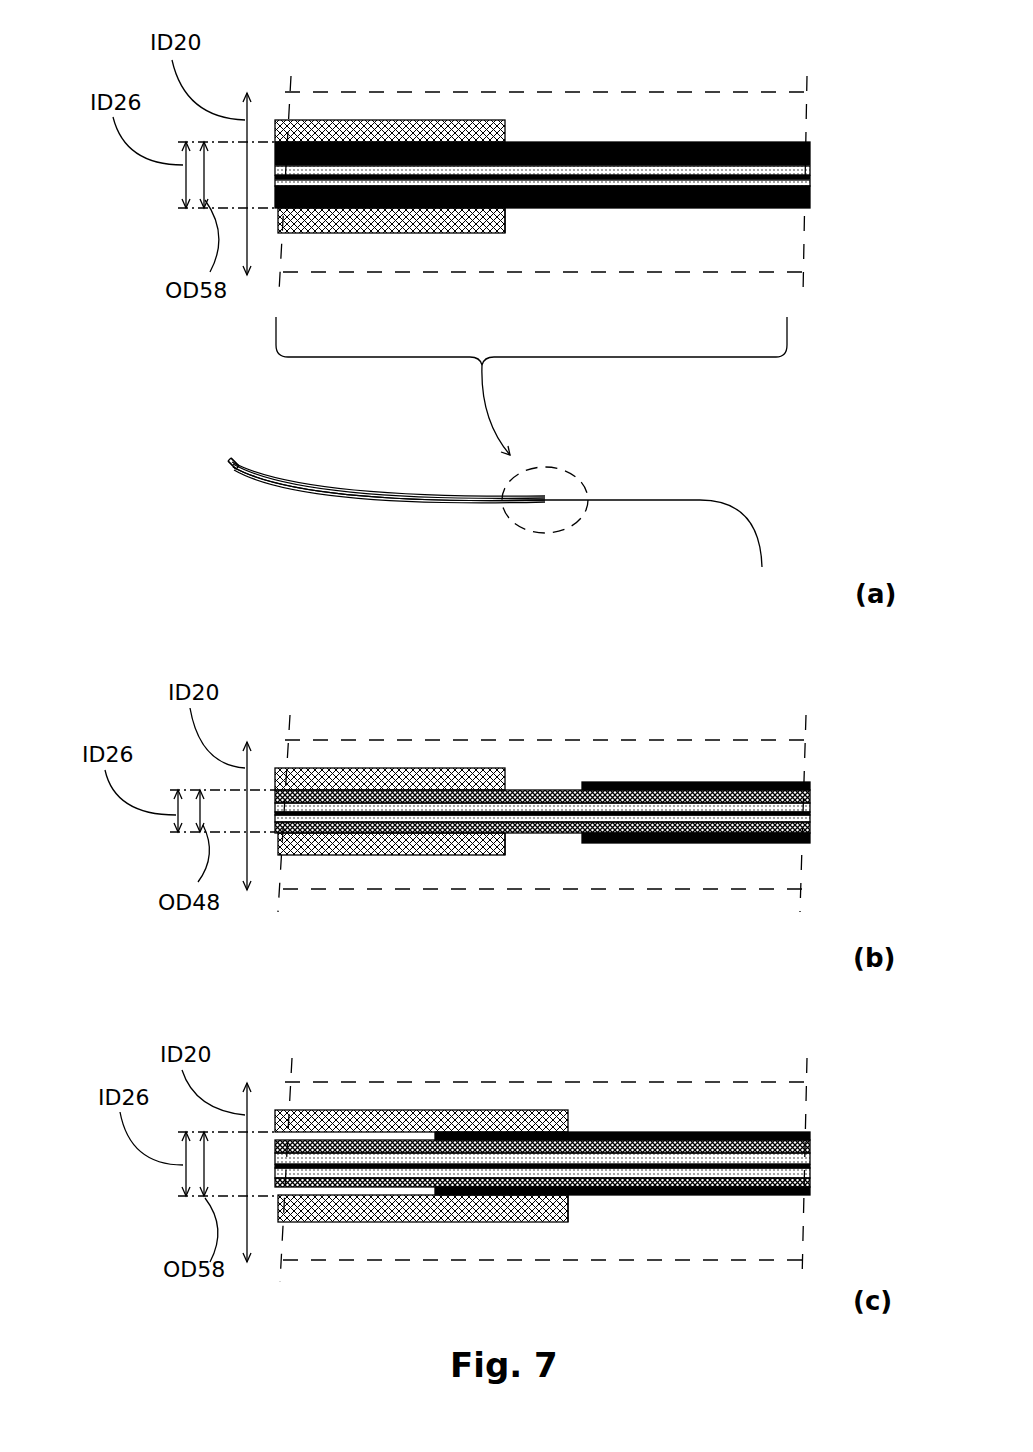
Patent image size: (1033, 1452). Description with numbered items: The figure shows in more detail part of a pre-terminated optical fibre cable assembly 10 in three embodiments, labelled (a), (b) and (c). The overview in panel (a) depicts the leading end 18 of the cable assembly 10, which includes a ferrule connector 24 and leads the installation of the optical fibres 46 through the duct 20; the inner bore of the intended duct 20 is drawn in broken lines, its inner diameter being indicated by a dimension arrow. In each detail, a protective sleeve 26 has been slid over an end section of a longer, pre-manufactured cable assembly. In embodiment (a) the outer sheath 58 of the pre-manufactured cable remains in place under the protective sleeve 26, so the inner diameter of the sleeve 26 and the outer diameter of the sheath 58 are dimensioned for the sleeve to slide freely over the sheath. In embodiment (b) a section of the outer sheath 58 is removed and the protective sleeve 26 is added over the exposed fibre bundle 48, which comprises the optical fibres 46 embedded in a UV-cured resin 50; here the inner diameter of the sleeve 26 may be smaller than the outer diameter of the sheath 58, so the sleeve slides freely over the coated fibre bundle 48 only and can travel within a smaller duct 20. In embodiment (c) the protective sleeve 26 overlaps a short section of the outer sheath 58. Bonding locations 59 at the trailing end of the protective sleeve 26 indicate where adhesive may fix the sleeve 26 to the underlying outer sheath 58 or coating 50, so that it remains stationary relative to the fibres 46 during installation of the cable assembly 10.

The pre-terminated optical fibre cable assembly 10 is at (622, 540).
The leading end 18 is at (335, 528).
The duct 20 is at (385, 92).
The ferrule connector 24 is at (237, 468).
The protective sleeve 26 is at (453, 120).
The optical fibres 46 is at (812, 167).
The fibre bundle 48 is at (543, 790).
The UV-cured resin 50 is at (812, 158).
The outer sheath 58 is at (658, 142).
The bonding locations 59 is at (508, 210).